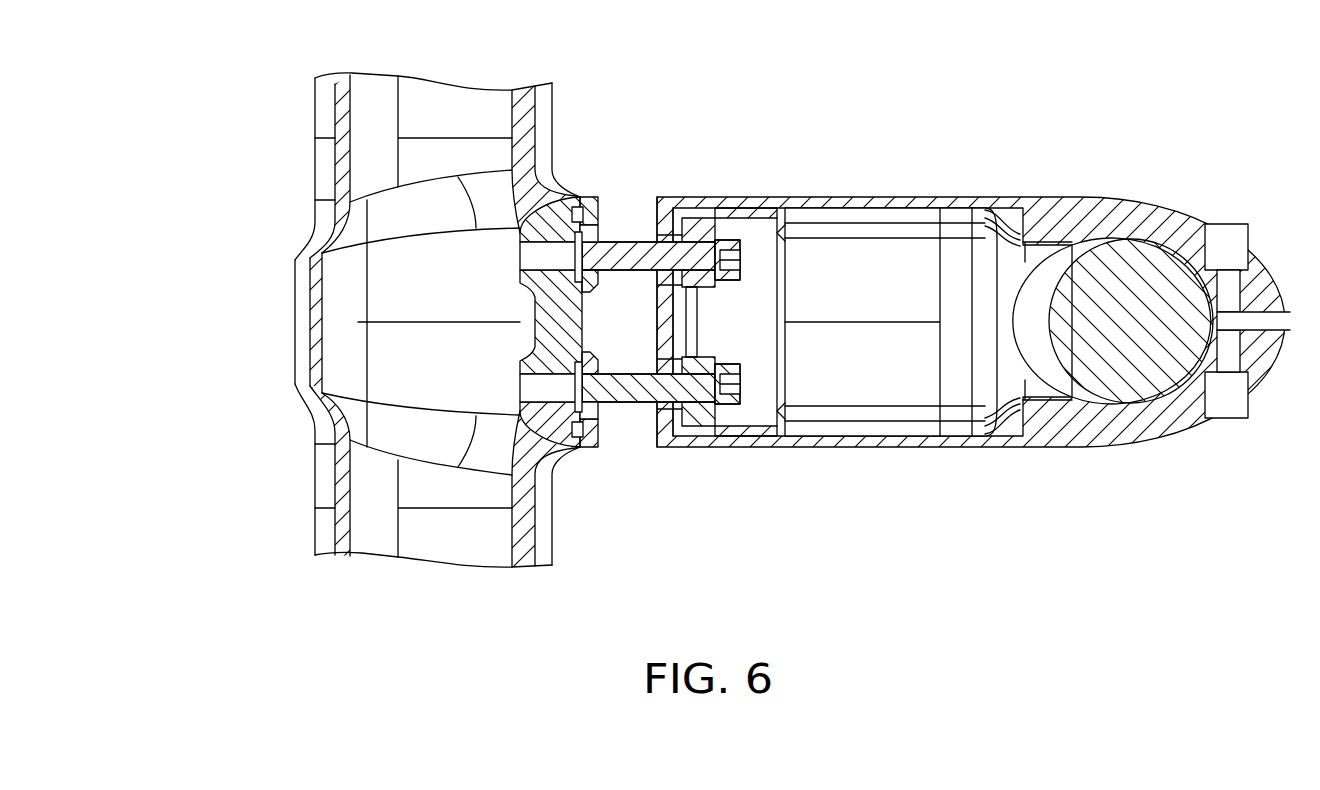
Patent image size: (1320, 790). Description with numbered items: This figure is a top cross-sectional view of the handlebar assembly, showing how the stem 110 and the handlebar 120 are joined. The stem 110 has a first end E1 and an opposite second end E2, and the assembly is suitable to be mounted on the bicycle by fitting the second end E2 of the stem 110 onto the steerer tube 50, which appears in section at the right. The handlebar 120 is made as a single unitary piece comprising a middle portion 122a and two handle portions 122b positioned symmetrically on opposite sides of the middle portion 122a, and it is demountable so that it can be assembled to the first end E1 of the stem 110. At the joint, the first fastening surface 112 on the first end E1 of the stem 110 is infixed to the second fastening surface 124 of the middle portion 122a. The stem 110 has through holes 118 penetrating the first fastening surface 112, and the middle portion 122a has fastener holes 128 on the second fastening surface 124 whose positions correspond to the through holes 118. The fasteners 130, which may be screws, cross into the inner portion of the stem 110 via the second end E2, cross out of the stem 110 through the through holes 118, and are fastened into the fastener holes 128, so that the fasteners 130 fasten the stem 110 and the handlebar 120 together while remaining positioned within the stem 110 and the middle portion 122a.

The steerer tube 50 is at (1133, 268).
The stem 110 is at (878, 214).
The first fastening surface 112 is at (646, 213).
The through holes 118 is at (696, 234).
The handlebar 120 is at (347, 320).
The middle portion 122a is at (328, 339).
The handle portions 122b is at (366, 155).
The second fastening surface 124 is at (596, 213).
The fastener holes 128 is at (553, 246).
The fasteners 130 is at (622, 247).
The first end E1 is at (656, 483).
The second end E2 is at (1144, 471).